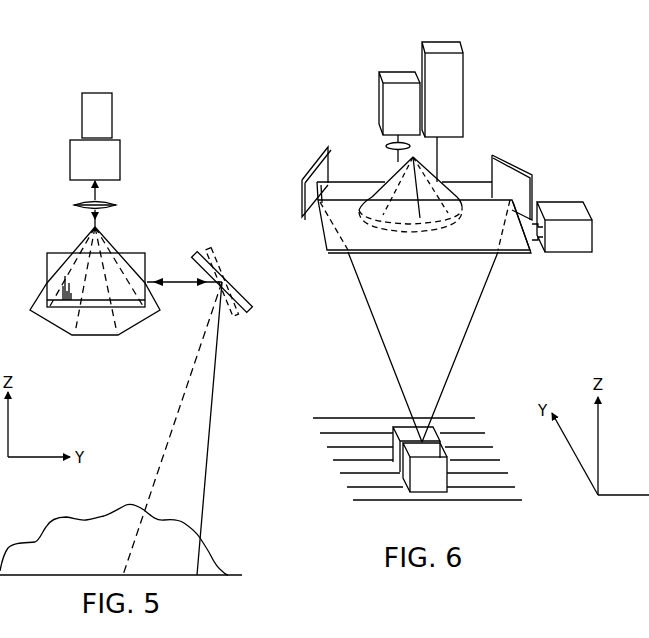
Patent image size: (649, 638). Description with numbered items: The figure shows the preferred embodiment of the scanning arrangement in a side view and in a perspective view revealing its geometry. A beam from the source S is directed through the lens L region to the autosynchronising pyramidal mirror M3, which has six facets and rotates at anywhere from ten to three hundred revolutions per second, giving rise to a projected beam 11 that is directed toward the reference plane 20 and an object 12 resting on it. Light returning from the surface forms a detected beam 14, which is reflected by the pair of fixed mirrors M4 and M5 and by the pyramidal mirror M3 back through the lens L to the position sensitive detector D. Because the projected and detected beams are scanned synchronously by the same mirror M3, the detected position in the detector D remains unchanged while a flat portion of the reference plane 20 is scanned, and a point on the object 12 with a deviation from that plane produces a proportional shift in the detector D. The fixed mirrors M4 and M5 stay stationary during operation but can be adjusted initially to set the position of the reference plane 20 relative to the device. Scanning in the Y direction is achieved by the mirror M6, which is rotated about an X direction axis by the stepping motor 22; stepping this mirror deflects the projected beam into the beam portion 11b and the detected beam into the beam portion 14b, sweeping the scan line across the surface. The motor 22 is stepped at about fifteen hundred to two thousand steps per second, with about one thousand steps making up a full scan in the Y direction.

In FIG. 5, the source S is at (97, 115).
In FIG. 6, the source S is at (442, 89).
In FIG. 5, the position sensitive detector D is at (95, 160).
In FIG. 6, the position sensitive detector D is at (399, 103).
In FIG. 6, the lens L is at (386, 145).
In FIG. 5, the detected beam 14 is at (47, 262).
In FIG. 5, the autosynchronising pyramidal mirror M3 is at (62, 320).
In FIG. 6, the autosynchronising pyramidal mirror M3 is at (400, 180).
In FIG. 6, the fixed mirror M4 is at (304, 173).
In FIG. 6, the fixed mirror M5 is at (514, 164).
In FIG. 5, the rotatable mirror M6 is at (248, 295).
In FIG. 6, the rotatable mirror M6 is at (440, 253).
In FIG. 5, the projected beam 11 is at (211, 420).
In FIG. 5, the projected beam portion 11b is at (160, 428).
In FIG. 5, the detected beam portion 14b is at (170, 435).
In FIG. 5, the object 12 is at (49, 526).
In FIG. 5, the reference plane 20 is at (233, 575).
In FIG. 6, the stepping motor 22 is at (569, 212).